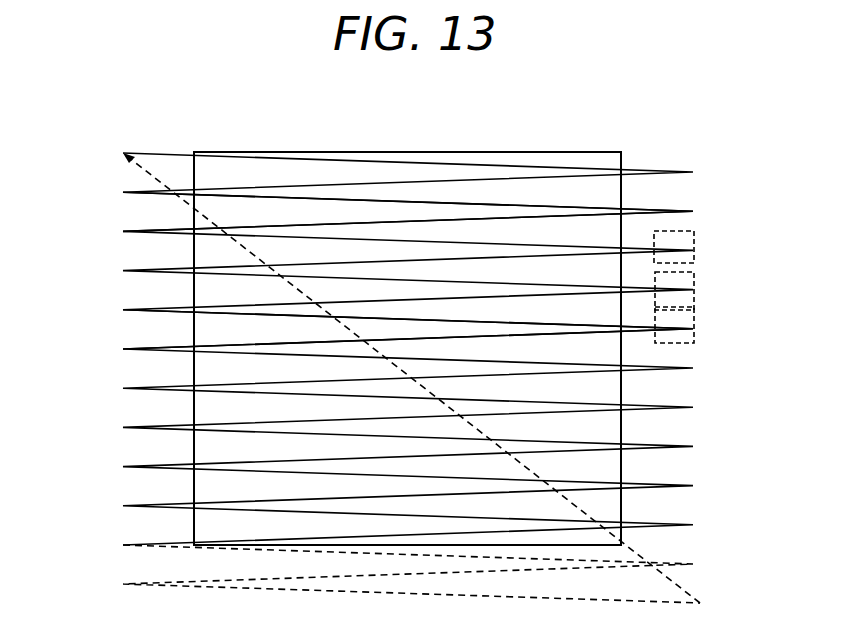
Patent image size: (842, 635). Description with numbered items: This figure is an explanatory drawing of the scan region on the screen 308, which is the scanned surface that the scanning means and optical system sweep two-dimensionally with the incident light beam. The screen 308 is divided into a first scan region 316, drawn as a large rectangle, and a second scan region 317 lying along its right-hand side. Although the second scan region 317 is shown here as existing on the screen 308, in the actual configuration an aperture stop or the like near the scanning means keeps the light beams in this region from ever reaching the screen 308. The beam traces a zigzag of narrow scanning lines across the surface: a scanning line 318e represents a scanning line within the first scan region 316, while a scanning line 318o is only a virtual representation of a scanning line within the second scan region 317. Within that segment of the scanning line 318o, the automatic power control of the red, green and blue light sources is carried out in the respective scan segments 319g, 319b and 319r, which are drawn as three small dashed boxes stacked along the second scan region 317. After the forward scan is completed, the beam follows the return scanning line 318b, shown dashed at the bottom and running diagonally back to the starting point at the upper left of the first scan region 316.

The screen 308 is at (710, 148).
The first scan region 316 is at (530, 152).
The second scan region 317 is at (652, 157).
The scanning line 318e is at (575, 207).
The scanning line 318o is at (633, 332).
The return scanning line 318b is at (690, 583).
The scan segment 319g is at (694, 243).
The scan segment 319b is at (694, 295).
The scan segment 319r is at (694, 325).